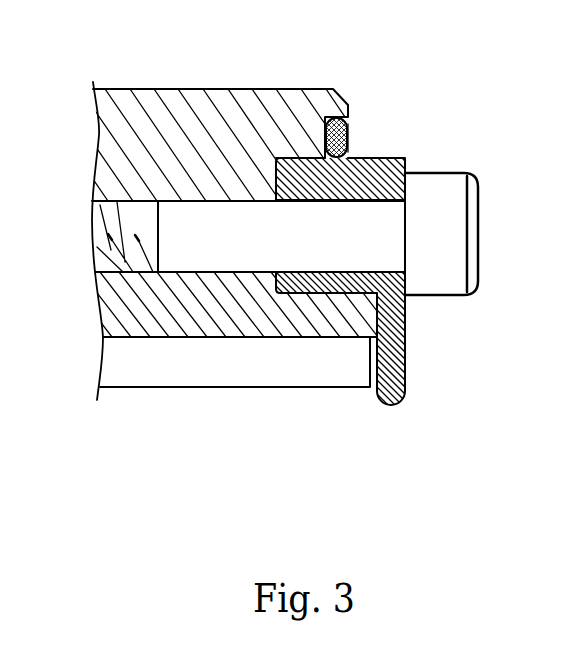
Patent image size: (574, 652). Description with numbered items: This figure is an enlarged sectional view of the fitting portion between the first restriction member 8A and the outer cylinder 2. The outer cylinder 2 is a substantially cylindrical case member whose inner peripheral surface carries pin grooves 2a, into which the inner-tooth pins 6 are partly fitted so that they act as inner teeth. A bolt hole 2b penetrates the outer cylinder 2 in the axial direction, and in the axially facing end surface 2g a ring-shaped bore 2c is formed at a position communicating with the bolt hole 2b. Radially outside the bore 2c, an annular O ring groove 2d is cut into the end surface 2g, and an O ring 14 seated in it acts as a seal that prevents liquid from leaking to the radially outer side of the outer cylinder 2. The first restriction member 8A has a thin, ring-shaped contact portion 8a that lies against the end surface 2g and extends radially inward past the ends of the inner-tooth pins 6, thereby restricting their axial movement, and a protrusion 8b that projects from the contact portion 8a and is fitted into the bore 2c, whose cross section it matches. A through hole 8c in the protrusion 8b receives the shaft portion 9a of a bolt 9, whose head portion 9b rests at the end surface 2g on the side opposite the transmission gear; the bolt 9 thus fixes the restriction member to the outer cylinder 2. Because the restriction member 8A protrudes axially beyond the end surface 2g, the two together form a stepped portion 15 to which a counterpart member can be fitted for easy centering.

The outer cylinder 2 is at (310, 89).
The pin groove 2a is at (152, 338).
The bolt hole 2b is at (196, 268).
The bore 2c is at (310, 294).
The O ring groove 2d is at (346, 121).
The end surface 2g is at (407, 314).
The inner-tooth pin 6 is at (209, 372).
The first restriction member 8A is at (386, 158).
The contact portion 8a is at (407, 360).
The protrusion 8b is at (278, 159).
The through hole 8c is at (350, 203).
The bolt 9 is at (455, 232).
The shaft portion 9a is at (256, 253).
The head portion 9b is at (455, 272).
The O ring 14 is at (350, 140).
The stepped portion 15 is at (369, 152).